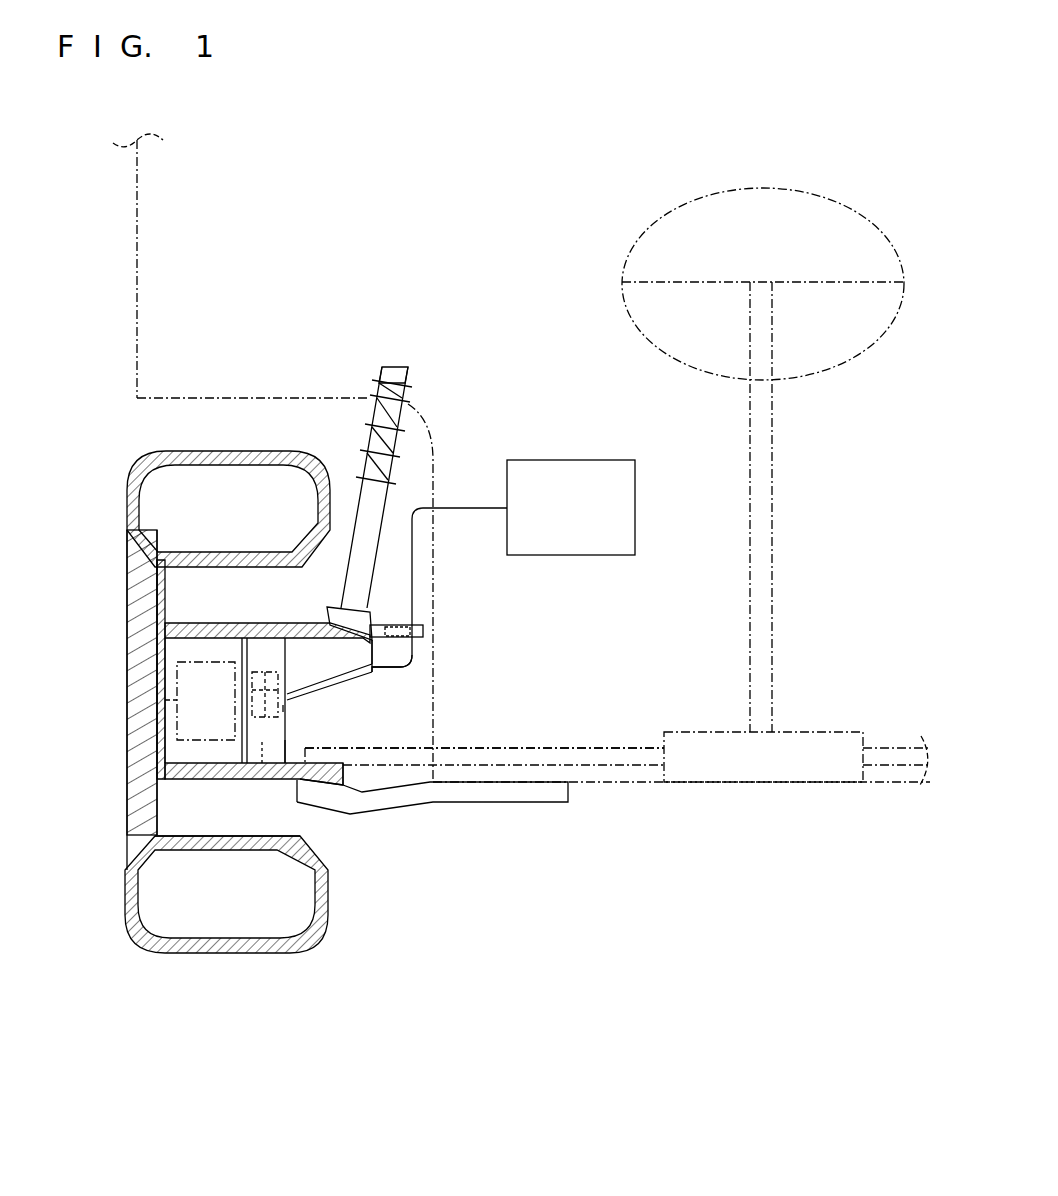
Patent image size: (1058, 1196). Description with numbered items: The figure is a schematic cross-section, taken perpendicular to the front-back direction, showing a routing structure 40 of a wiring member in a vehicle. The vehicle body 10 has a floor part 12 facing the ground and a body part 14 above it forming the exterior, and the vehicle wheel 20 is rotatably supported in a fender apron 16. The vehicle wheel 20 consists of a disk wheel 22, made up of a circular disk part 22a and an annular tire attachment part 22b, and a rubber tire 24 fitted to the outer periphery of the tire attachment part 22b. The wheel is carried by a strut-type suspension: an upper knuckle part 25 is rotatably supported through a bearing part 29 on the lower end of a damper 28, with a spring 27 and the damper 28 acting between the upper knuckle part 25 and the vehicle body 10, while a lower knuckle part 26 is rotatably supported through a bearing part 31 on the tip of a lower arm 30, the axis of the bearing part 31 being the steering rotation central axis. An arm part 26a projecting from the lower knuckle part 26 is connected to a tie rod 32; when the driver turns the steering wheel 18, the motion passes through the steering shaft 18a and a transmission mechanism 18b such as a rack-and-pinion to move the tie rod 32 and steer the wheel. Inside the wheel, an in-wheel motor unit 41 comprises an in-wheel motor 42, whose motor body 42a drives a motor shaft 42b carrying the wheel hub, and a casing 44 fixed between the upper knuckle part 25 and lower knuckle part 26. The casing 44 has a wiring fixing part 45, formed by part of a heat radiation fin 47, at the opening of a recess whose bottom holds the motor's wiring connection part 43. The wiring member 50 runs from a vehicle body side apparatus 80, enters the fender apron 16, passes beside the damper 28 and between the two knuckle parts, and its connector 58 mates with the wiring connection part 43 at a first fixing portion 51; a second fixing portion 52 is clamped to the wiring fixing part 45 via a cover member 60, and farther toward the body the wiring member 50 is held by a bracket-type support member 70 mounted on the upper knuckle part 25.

The vehicle body 10 is at (125, 268).
The floor part 12 is at (883, 786).
The body part 14 is at (136, 333).
The fender apron 16 is at (200, 398).
The steering wheel 18 is at (850, 355).
The steering shaft 18a is at (775, 560).
The transmission mechanism 18b is at (820, 732).
The vehicle wheel 20 is at (138, 455).
The disk wheel 22 is at (62, 818).
The disk part 22a is at (130, 822).
The tire attachment part 22b is at (200, 852).
The tire 24 is at (255, 452).
The upper knuckle part 25 is at (192, 623).
The lower knuckle part 26 is at (175, 785).
The arm part 26a is at (352, 775).
The spring 27 is at (410, 400).
The damper 28 is at (408, 376).
The bearing part 29 is at (328, 607).
The lower arm 30 is at (497, 803).
The bearing part 31 is at (340, 800).
The tie rod 32 is at (605, 748).
The routing structure 40 is at (445, 568).
The in-wheel motor unit 41 is at (290, 731).
The in-wheel motor 42 is at (62, 720).
The motor body 42a is at (170, 745).
The motor shaft 42b is at (177, 700).
The wiring connection part 43 is at (241, 640).
The casing 44 is at (244, 765).
The wiring fixing part 45 is at (287, 711).
The heat radiation fin 47 is at (283, 745).
The wiring member 50 is at (383, 685).
The first fixing portion 51 is at (262, 766).
The second fixing portion 52 is at (370, 678).
The connector 58 is at (268, 660).
The cover member 60 is at (289, 690).
The support member 70 is at (425, 633).
The vehicle body side apparatus 80 is at (596, 459).